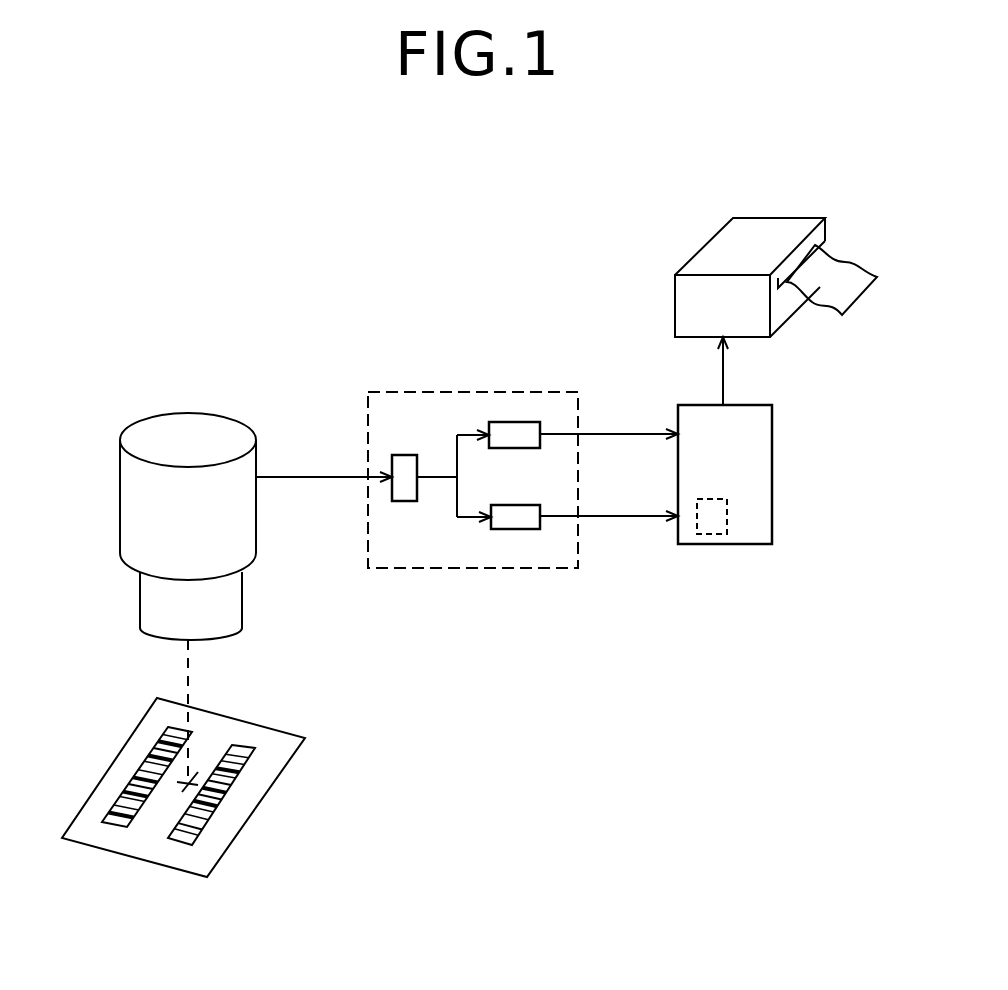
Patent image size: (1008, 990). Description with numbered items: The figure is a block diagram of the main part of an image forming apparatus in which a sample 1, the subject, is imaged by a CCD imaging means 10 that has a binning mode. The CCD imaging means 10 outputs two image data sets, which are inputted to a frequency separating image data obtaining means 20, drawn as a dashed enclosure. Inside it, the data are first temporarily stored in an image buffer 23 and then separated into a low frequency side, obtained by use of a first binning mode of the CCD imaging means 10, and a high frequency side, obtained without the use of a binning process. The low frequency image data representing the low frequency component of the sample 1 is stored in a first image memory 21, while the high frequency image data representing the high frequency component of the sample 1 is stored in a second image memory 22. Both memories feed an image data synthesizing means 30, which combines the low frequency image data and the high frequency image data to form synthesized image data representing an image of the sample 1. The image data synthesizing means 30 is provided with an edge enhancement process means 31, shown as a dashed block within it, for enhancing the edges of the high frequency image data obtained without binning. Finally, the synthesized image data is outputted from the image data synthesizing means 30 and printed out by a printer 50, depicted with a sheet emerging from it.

The sample 1 is at (268, 727).
The CCD imaging means 10 is at (213, 411).
The frequency separating image data obtaining means 20 is at (487, 390).
The first image memory 21 is at (507, 448).
The second image memory 22 is at (512, 530).
The image buffer 23 is at (405, 502).
The image data synthesizing means 30 is at (773, 437).
The edge enhancement process means 31 is at (713, 535).
The printer 50 is at (785, 217).